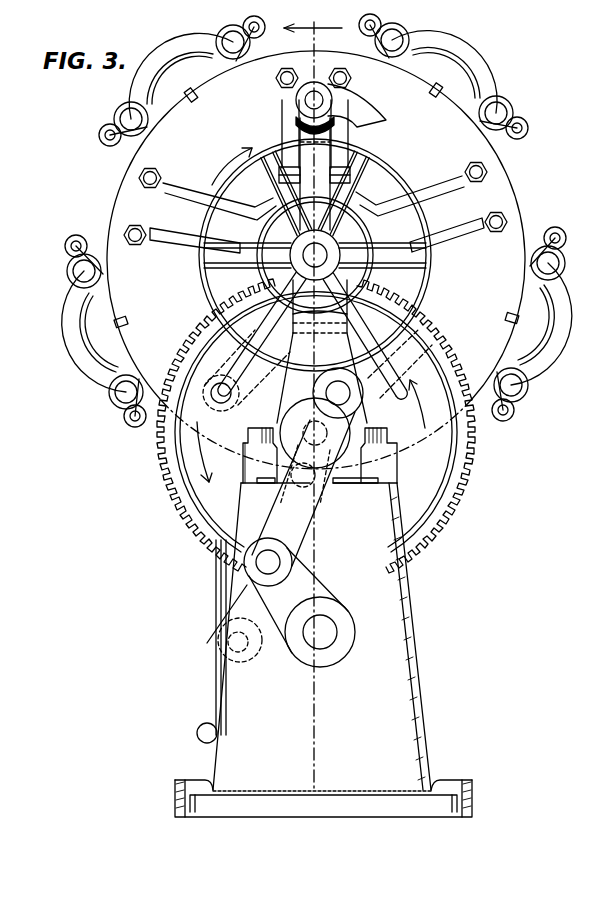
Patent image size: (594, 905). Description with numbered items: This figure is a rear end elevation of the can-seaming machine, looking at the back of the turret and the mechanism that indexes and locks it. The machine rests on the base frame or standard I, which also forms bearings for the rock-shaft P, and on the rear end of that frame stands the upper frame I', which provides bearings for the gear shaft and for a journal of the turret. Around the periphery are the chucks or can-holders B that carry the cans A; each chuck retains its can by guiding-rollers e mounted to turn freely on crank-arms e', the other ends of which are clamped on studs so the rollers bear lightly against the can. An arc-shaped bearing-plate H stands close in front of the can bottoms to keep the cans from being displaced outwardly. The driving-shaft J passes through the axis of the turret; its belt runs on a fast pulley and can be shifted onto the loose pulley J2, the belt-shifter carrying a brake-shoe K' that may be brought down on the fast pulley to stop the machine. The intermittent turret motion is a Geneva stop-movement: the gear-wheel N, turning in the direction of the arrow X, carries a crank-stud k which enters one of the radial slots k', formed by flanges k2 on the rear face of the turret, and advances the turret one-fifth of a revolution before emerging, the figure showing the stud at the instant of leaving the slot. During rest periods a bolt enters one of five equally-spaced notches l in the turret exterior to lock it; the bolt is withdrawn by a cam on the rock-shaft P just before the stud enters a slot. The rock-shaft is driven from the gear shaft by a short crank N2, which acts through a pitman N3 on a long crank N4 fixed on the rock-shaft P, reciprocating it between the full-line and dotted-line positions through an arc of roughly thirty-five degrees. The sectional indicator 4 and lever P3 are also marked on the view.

The can A is at (320, 208).
The chuck or can-holder B is at (317, 209).
The guiding-roller e is at (306, 217).
The crank-arm e' is at (315, 220).
The notch l is at (316, 205).
The brake-shoe K' is at (318, 237).
The driving-shaft J is at (316, 260).
The loose pulley J2 is at (405, 170).
The radial slot k' is at (313, 195).
The flange k2 is at (315, 243).
The crank-stud k is at (221, 403).
The upper frame I' is at (322, 270).
The arc-shaped bearing-plate H is at (315, 433).
The gear-wheel N is at (316, 426).
The short crank N2 is at (338, 393).
The pitman N3 is at (303, 489).
The long crank N4 is at (296, 595).
The rock-shaft P is at (320, 632).
The lever P3 is at (212, 588).
The base frame or standard I is at (323, 622).
The arrow X is at (316, 315).
The section line 4 is at (313, 409).